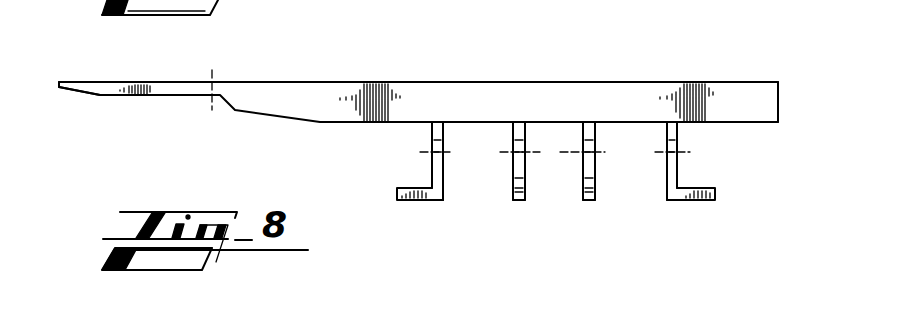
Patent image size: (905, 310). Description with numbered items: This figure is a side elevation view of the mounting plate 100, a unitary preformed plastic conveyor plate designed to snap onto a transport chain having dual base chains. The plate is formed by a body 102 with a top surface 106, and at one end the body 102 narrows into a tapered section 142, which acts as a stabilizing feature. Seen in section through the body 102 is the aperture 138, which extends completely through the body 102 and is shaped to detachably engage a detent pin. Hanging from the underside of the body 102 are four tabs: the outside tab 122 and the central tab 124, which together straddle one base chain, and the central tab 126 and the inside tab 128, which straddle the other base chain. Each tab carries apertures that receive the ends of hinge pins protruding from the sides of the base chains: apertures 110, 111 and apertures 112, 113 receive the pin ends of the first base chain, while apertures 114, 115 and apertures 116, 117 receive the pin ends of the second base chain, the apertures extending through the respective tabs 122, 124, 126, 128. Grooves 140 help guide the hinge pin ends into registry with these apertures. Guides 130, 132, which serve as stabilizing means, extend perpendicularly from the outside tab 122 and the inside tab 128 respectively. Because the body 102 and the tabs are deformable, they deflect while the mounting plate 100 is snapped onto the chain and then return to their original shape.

The mounting plate 100 is at (574, 23).
The body 102 is at (779, 88).
The top surface 106 is at (437, 80).
The aperture 110 is at (418, 152).
The aperture 111 is at (387, 209).
The aperture 112 is at (504, 152).
The aperture 113 is at (512, 201).
The aperture 114 is at (600, 152).
The aperture 115 is at (573, 216).
The aperture 116 is at (680, 152).
The aperture 117 is at (711, 206).
The outside tab 122 is at (449, 200).
The central tab 124 is at (521, 201).
The central tab 126 is at (590, 201).
The inside tab 128 is at (666, 178).
The guide 130 is at (397, 194).
The guide 132 is at (717, 192).
The aperture 138 is at (212, 74).
The groove 140 is at (469, 304).
The tapered section 142 is at (146, 99).